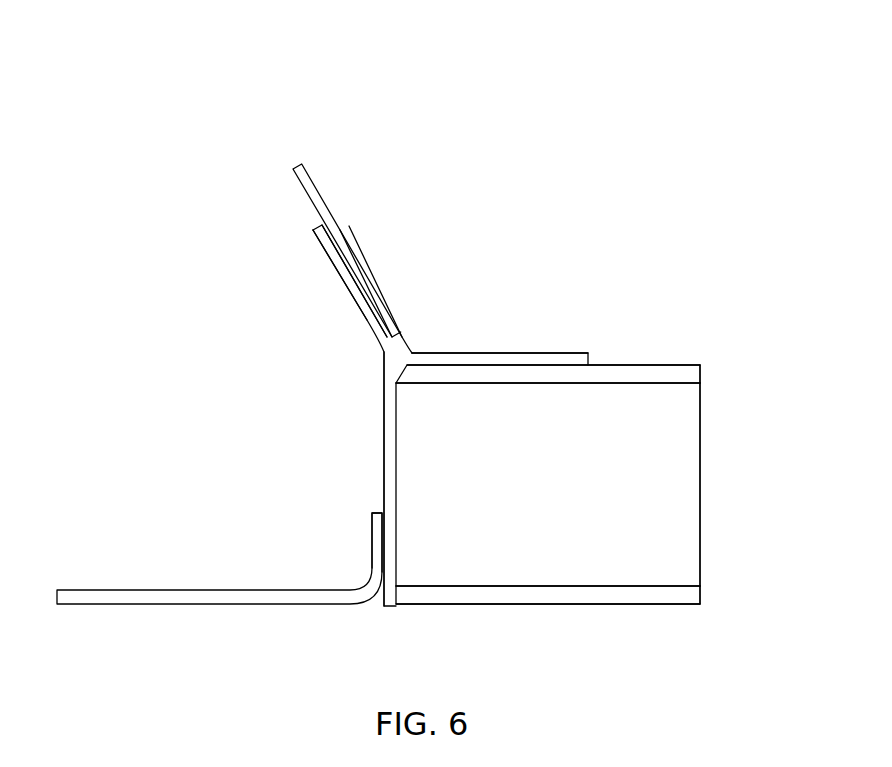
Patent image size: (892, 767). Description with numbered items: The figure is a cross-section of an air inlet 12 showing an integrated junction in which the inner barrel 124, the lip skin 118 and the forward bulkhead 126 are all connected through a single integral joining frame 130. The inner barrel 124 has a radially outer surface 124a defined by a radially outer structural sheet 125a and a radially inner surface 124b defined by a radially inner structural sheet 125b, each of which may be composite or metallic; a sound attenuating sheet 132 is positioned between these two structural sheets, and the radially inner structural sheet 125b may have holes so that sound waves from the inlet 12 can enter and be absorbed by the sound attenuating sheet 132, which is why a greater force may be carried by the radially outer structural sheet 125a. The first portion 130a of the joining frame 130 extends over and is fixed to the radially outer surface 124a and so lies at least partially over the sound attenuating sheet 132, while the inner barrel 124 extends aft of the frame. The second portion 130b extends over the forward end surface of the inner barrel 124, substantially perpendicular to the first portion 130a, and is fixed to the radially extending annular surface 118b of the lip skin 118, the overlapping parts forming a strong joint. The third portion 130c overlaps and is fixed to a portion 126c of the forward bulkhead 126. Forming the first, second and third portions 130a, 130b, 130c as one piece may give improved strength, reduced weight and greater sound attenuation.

The inlet 12 is at (100, 127).
The lip skin 118 is at (130, 605).
The radially extending annular surface of the lip skin 118b is at (371, 532).
The inner barrel 124 is at (705, 415).
The radially outer surface 124a is at (680, 366).
The radially inner surface 124b is at (653, 606).
The radially outer structural sheet 125a is at (702, 373).
The radially inner structural sheet 125b is at (702, 595).
The forward bulkhead 126 is at (315, 190).
The portion of the forward bulkhead 126c is at (357, 260).
The joining frame 130 is at (587, 352).
The first portion of the joining frame 130a is at (528, 352).
The second portion of the joining frame 130b is at (382, 477).
The third portion of the joining frame 130c is at (337, 273).
The sound attenuating sheet 132 is at (693, 485).